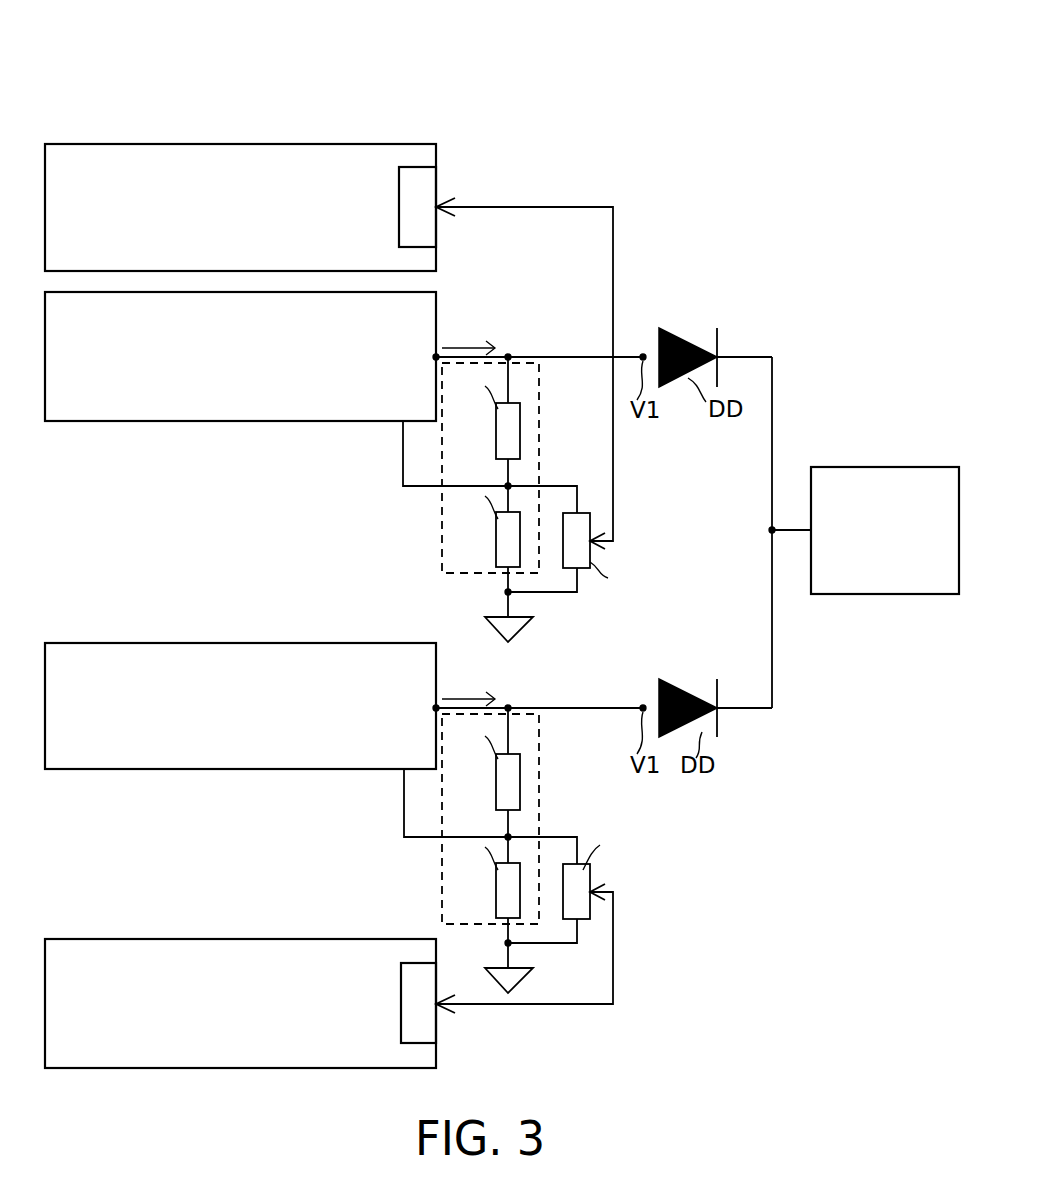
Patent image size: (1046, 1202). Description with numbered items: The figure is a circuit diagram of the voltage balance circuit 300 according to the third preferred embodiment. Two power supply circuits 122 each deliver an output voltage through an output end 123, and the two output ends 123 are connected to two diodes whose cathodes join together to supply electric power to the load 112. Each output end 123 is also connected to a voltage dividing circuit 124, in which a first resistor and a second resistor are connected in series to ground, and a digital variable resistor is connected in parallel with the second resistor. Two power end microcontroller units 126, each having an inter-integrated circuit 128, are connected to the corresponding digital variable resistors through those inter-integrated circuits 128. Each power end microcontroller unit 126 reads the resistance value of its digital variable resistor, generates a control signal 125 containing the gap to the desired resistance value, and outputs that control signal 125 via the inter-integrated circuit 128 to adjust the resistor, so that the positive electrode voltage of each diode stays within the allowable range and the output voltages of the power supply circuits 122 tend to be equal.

The voltage balance circuit 300 is at (133, 33).
The power end microcontroller unit 126 is at (320, 143).
The inter-integrated circuit 128 is at (430, 186).
The control signal 125 is at (520, 198).
The output end 123 is at (437, 356).
The power supply circuit 122 is at (246, 421).
The voltage dividing circuit 124 is at (539, 365).
The load 112 is at (886, 594).